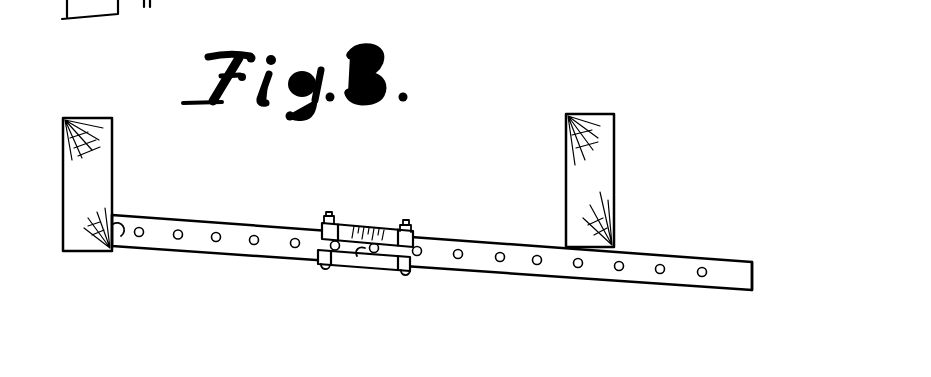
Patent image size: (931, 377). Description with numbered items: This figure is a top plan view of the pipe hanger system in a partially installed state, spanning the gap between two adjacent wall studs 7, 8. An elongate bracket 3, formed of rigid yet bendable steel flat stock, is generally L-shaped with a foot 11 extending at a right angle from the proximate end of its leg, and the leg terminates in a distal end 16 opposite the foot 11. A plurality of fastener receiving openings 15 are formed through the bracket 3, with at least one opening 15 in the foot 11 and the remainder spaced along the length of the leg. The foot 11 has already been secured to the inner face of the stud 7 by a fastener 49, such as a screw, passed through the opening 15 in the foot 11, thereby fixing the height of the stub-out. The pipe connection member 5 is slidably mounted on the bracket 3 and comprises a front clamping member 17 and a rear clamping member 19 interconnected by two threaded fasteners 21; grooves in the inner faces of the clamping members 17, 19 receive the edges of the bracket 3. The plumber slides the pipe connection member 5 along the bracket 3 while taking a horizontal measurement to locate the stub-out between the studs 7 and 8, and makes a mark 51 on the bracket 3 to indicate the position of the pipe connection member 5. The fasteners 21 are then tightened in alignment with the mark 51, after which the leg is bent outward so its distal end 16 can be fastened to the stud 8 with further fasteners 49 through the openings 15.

The elongate bracket 3 is at (245, 259).
The pipe connection member 5 is at (344, 224).
The wall stud 7 is at (98, 118).
The wall stud 8 is at (614, 146).
The foot 11 is at (113, 215).
The fastener receiving openings 15 is at (253, 238).
The distal end 16 is at (753, 273).
The front clamping member 17 is at (343, 267).
The rear clamping member 19 is at (362, 226).
The threaded fasteners 21 is at (326, 270).
The fasteners 49 is at (118, 234).
The mark 51 is at (358, 257).